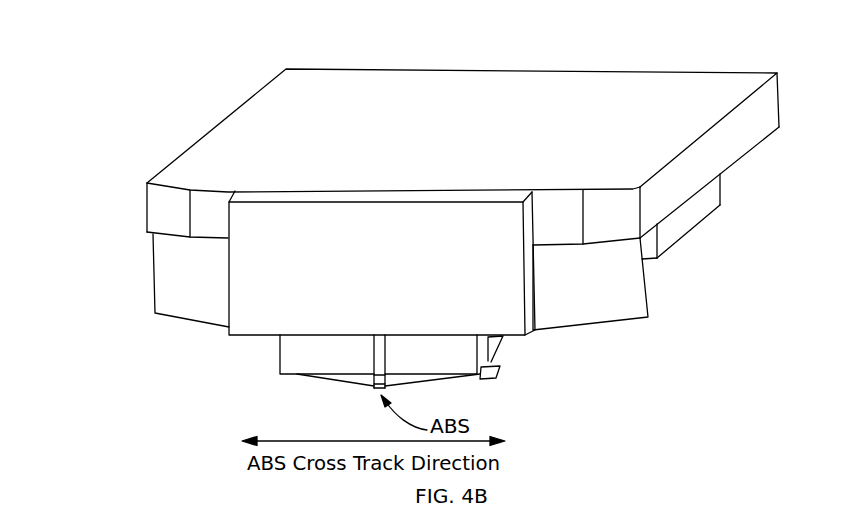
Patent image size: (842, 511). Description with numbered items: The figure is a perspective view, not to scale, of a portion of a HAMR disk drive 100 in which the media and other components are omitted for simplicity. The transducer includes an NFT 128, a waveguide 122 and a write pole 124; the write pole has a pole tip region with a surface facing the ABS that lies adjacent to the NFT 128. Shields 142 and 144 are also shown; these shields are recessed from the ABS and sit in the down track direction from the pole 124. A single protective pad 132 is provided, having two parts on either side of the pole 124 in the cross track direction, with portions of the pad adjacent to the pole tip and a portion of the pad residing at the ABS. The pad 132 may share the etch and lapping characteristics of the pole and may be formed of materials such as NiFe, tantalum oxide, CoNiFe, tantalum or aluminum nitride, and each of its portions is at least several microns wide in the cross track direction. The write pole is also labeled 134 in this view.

The HAMR disk drive 100 is at (497, 38).
The waveguide 122 is at (305, 378).
The write pole 124 is at (386, 362).
The NFT 128 is at (378, 388).
The protective pad 132 is at (280, 353).
The write pole 134 is at (226, 221).
The shield 142 is at (153, 275).
The shield 144 is at (703, 72).